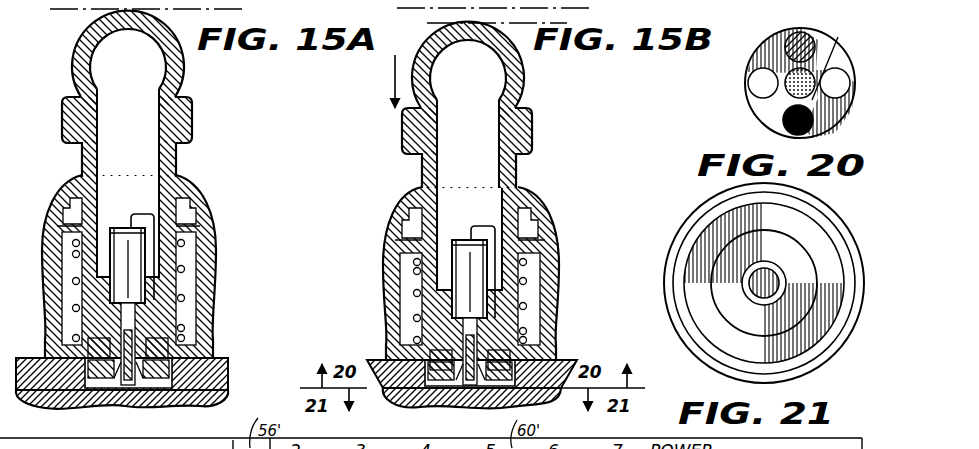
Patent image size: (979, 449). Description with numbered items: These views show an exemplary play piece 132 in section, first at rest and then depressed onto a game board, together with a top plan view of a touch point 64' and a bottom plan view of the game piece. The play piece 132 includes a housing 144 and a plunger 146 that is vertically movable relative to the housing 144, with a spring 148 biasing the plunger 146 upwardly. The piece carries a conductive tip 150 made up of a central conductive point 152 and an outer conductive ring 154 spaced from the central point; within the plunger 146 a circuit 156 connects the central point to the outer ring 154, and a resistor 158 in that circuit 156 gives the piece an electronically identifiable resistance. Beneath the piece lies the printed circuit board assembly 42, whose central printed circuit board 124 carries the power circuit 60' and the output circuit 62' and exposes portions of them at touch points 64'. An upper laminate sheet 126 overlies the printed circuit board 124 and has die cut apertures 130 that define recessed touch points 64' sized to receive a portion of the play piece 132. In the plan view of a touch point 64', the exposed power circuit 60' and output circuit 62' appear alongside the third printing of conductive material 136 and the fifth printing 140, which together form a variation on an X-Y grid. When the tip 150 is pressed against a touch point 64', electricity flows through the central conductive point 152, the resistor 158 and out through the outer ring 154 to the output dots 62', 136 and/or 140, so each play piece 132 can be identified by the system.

In FIG. 15B, the printed circuit board assembly 42 is at (567, 353).
In FIG. 15A, the central printed circuit board 124 is at (14, 402).
In FIG. 15B, the central printed circuit board 124 is at (403, 398).
In FIG. 15A, the upper laminate sheet 126 is at (45, 357).
In FIG. 15B, the upper laminate sheet 126 is at (425, 362).
In FIG. 15B, the die cut apertures 130 is at (430, 363).
In FIG. 15A, the play piece 132 is at (131, 184).
In FIG. 15B, the play piece 132 is at (472, 190).
In FIG. 21, the play piece 132 is at (748, 287).
In FIG. 20, the third printing of conductive material 136 is at (763, 88).
In FIG. 20, the fifth printing 140 is at (803, 32).
In FIG. 15A, the housing 144 is at (213, 269).
In FIG. 15B, the housing 144 is at (398, 206).
In FIG. 21, the housing 144 is at (847, 340).
In FIG. 15A, the plunger 146 is at (80, 21).
In FIG. 15B, the plunger 146 is at (441, 29).
In FIG. 15A, the spring 148 is at (73, 290).
In FIG. 15B, the spring 148 is at (527, 293).
In FIG. 15A, the conductive tip 150 is at (108, 395).
In FIG. 21, the conductive tip 150 is at (808, 247).
In FIG. 15A, the central conductive point 152 is at (142, 398).
In FIG. 21, the central conductive point 152 is at (760, 292).
In FIG. 15A, the outer conductive ring 154 is at (178, 396).
In FIG. 21, the outer conductive ring 154 is at (753, 326).
In FIG. 15A, the circuit 156 is at (142, 222).
In FIG. 15B, the circuit 156 is at (481, 226).
In FIG. 15A, the resistor 158 is at (80, 217).
In FIG. 15B, the resistor 158 is at (440, 270).
In FIG. 20, the power circuit 60' is at (840, 67).
In FIG. 20, the output circuit 62' is at (768, 125).
In FIG. 20, the touch points 64' is at (771, 59).